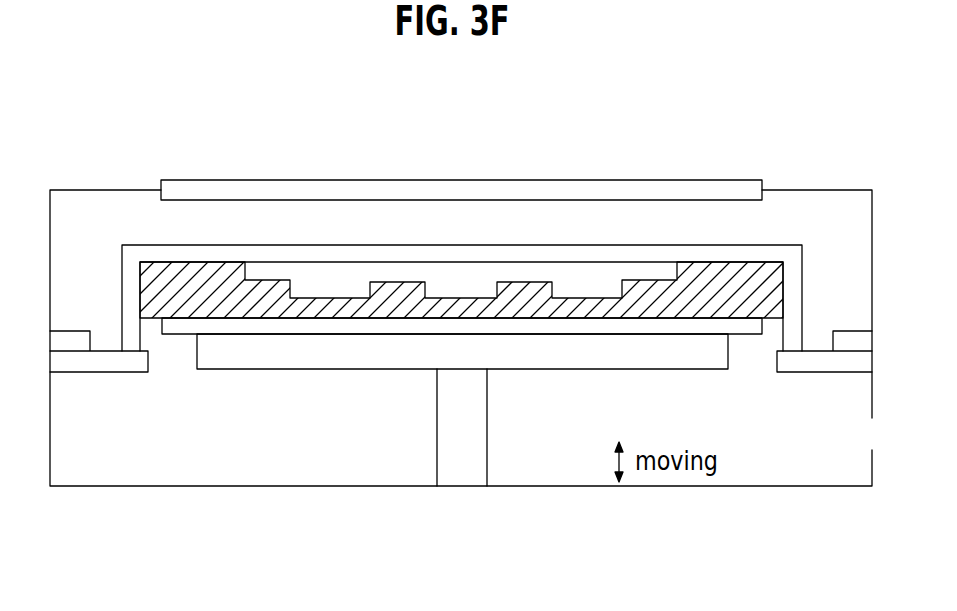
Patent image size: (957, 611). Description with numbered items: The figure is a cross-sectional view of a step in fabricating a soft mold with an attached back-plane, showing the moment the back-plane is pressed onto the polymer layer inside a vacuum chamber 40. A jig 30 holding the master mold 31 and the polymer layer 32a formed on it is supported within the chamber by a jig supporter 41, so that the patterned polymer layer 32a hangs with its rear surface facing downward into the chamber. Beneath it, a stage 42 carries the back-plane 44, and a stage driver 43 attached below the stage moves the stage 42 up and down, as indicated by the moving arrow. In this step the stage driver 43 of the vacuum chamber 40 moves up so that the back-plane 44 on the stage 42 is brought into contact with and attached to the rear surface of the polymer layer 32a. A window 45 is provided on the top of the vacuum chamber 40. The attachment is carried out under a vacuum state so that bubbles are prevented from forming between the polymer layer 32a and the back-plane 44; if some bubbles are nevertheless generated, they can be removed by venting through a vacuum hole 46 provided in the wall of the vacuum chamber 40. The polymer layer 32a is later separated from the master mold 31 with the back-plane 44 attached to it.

The jig 30 is at (770, 256).
The master mold 31 is at (575, 272).
The polymer layer 32a is at (703, 272).
The vacuum chamber 40 is at (223, 487).
The jig supporter 41 is at (857, 343).
The stage 42 is at (703, 362).
The stage driver 43 is at (478, 465).
The back-plane 44 is at (323, 328).
The window 45 is at (725, 190).
The vacuum hole 46 is at (873, 431).